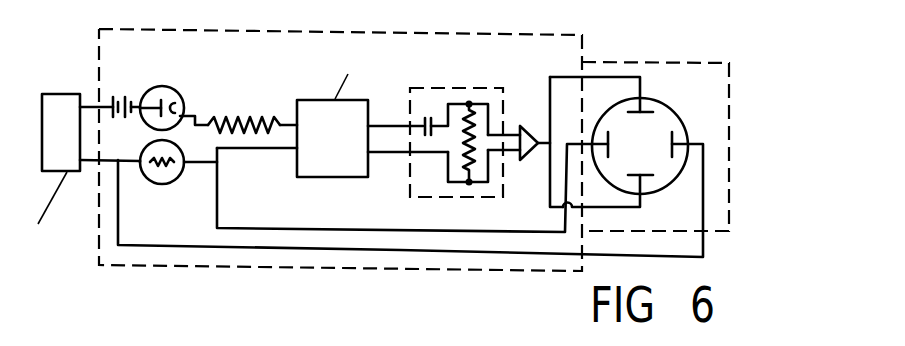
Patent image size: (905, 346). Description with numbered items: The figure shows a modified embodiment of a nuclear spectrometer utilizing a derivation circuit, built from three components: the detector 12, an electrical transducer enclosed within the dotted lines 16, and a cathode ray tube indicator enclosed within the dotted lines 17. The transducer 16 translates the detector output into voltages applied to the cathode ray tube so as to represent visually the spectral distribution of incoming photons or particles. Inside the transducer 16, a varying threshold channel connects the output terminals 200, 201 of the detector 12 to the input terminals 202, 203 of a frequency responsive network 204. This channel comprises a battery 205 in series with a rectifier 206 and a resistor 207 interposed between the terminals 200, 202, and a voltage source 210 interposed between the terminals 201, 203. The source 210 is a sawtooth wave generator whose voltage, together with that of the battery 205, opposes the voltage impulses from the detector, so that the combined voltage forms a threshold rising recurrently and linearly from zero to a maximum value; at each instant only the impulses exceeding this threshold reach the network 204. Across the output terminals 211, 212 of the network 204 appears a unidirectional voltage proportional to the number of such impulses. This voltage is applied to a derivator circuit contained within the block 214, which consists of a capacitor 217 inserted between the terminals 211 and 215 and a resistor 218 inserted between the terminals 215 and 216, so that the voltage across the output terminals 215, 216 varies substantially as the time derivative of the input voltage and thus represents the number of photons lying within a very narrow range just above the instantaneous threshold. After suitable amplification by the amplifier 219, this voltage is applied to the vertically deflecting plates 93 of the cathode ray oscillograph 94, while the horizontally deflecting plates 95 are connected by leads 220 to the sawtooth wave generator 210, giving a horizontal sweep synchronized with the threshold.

The detector 12 is at (52, 94).
The electrical transducer 16 is at (502, 270).
The cathode ray tube indicator 17 is at (730, 232).
The vertically deflecting plates 93 is at (645, 175).
The cathode ray oscillograph 94 is at (668, 182).
The horizontally deflecting plates 95 is at (612, 147).
The output terminal of detector 200 is at (90, 104).
The output terminal of detector 201 is at (93, 163).
The input terminal of frequency responsive network 202 is at (288, 122).
The input terminal of frequency responsive network 203 is at (273, 149).
The frequency responsive network 204 is at (356, 107).
The battery 205 is at (122, 96).
The rectifier 206 is at (168, 93).
The resistor 207 is at (245, 117).
The voltage source 210 is at (170, 182).
The output terminal of frequency responsive network 211 is at (380, 121).
The output terminal of frequency responsive network 212 is at (397, 153).
The derivator circuit 214 is at (458, 198).
The output terminal of derivator circuit 215 is at (510, 133).
The output terminal of derivator circuit 216 is at (508, 152).
The capacitor 217 is at (423, 120).
The resistor 218 is at (475, 120).
The amplifier 219 is at (532, 143).
The leads 220 is at (173, 246).